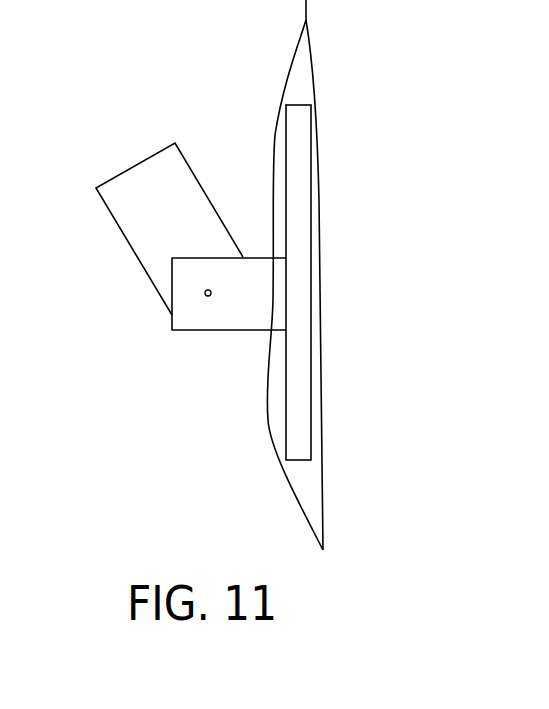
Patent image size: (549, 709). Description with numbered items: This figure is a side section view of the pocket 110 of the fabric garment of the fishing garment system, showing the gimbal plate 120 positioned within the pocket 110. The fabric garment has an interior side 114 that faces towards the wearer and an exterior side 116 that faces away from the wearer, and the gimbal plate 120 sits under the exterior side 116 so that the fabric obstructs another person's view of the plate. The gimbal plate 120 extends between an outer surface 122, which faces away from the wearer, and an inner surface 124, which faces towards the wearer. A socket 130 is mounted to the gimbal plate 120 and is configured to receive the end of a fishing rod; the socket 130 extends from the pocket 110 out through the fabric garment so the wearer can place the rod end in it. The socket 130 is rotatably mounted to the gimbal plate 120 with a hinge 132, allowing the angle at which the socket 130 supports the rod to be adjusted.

The pocket 110 is at (308, 73).
The interior side 114 is at (330, 426).
The exterior side 116 is at (262, 425).
The gimbal plate 120 is at (300, 291).
The outer surface 122 is at (284, 127).
The inner surface 124 is at (318, 150).
The socket 130 is at (140, 223).
The hinge 132 is at (194, 320).